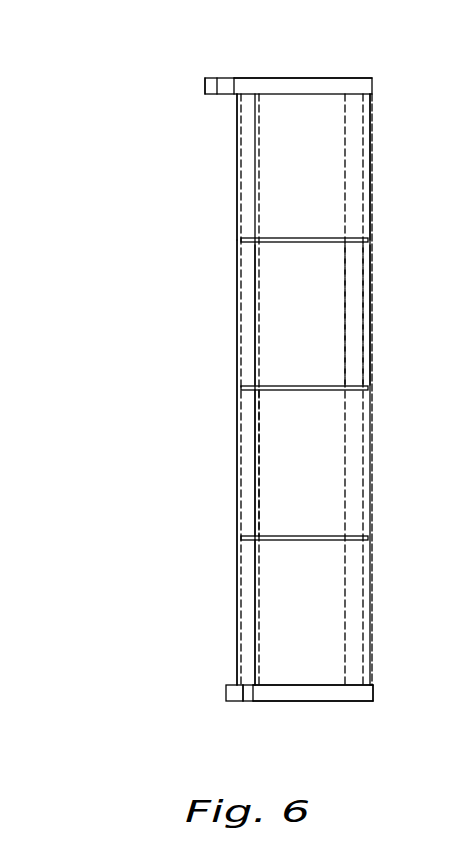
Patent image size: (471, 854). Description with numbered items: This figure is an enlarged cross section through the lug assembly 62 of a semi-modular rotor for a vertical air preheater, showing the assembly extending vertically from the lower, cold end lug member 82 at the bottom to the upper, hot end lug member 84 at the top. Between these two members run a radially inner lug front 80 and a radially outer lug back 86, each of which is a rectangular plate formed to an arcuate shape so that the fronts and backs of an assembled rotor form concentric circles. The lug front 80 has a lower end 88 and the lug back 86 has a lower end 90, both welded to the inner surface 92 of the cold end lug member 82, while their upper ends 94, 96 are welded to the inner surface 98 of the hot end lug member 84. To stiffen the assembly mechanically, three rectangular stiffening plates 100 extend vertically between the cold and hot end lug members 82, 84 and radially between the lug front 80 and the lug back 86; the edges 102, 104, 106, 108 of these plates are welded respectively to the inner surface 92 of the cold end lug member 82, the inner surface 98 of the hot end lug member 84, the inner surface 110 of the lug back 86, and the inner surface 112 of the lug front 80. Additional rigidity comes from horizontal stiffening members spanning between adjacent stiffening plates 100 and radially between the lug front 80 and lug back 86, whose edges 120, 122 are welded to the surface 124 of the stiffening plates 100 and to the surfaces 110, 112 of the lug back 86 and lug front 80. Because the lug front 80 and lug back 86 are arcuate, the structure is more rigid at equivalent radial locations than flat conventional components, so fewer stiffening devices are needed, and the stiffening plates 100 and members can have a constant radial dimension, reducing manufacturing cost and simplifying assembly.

The lug assembly 62 is at (146, 82).
The lug front 80 is at (258, 318).
The cold end lug member 82 is at (220, 696).
The hot end lug member 84 is at (371, 78).
The lug back 86 is at (372, 285).
The lower end 88 is at (240, 682).
The lower end 90 is at (376, 681).
The inner surface 92 is at (302, 686).
The upper end 94 is at (232, 102).
The upper end 96 is at (372, 96).
The inner surface 98 is at (282, 94).
The stiffening plate 100 is at (312, 478).
The edge 102 is at (310, 89).
The edge 104 is at (372, 345).
The edge 106 is at (330, 683).
The edge 108 is at (257, 440).
The inner surface 110 is at (364, 283).
The inner surface 112 is at (260, 498).
The edge 120 is at (372, 388).
The edge 122 is at (243, 390).
The surface 124 is at (318, 604).